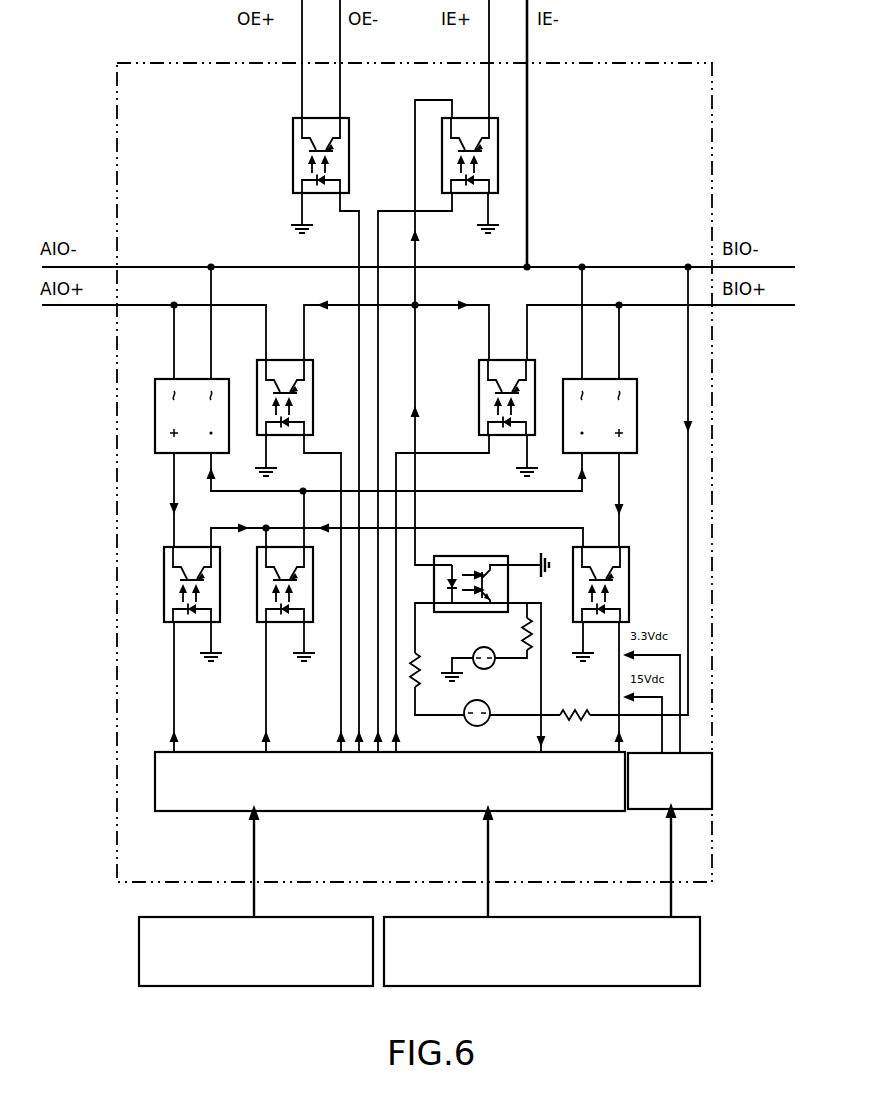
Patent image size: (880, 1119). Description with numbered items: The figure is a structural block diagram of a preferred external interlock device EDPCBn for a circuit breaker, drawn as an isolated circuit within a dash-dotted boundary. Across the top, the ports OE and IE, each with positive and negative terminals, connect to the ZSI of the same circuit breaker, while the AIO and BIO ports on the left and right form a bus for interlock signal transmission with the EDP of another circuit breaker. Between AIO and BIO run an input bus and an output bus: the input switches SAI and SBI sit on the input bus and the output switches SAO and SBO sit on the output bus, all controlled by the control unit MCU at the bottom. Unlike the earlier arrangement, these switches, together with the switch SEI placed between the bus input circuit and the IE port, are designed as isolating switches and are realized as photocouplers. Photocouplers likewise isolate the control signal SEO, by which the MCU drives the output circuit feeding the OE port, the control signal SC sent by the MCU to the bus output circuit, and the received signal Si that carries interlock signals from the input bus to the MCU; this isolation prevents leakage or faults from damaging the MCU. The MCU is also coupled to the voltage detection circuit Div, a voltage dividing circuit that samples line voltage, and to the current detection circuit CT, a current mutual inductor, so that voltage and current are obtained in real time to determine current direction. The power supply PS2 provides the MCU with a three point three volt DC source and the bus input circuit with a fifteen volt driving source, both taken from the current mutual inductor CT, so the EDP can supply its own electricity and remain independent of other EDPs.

The EDP_CBn EDPCBn is at (414, 472).
The control signal S_EO SEO is at (301, 435).
The switch S_EI SEI is at (464, 426).
The input switch S_AI SAI is at (298, 556).
The input switch S_BI SBI is at (467, 556).
The output switch S_AO SAO is at (178, 649).
The control signal S_O SC is at (276, 649).
The output switch S_BO SBO is at (616, 649).
The received signal S_i Si is at (551, 509).
The control unit MCU is at (390, 781).
The power supply P_S2 PS2 is at (670, 781).
The voltage detection circuit Div is at (256, 895).
The current detection circuit CT is at (542, 894).